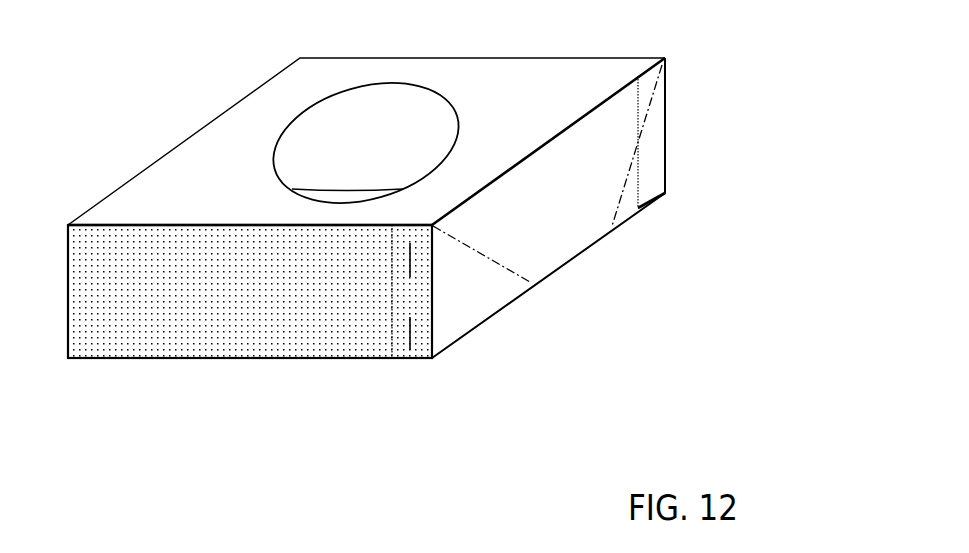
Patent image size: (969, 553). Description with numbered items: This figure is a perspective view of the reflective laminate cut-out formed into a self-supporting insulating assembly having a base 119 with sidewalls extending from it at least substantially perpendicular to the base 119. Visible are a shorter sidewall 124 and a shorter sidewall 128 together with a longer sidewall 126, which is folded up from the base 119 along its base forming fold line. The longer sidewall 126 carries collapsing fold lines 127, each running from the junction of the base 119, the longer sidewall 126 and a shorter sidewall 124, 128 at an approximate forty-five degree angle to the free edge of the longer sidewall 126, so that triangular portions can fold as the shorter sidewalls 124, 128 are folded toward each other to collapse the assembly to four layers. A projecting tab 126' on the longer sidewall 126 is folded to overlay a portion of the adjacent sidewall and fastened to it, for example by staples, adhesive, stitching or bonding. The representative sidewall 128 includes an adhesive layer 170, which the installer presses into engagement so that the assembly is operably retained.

The base 119 is at (217, 188).
The sidewall 124 is at (404, 138).
The sidewall 126 is at (568, 208).
The projecting tab 126' is at (350, 355).
The collapsing fold line 127 is at (490, 265).
The sidewall 128 is at (263, 352).
The adhesive layer 170 is at (143, 328).